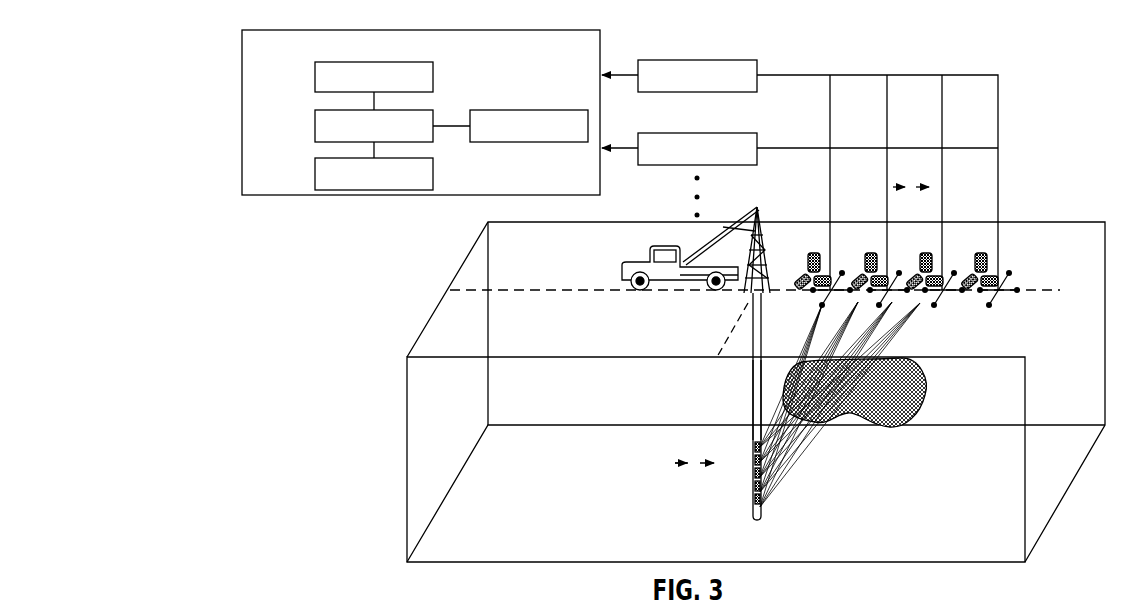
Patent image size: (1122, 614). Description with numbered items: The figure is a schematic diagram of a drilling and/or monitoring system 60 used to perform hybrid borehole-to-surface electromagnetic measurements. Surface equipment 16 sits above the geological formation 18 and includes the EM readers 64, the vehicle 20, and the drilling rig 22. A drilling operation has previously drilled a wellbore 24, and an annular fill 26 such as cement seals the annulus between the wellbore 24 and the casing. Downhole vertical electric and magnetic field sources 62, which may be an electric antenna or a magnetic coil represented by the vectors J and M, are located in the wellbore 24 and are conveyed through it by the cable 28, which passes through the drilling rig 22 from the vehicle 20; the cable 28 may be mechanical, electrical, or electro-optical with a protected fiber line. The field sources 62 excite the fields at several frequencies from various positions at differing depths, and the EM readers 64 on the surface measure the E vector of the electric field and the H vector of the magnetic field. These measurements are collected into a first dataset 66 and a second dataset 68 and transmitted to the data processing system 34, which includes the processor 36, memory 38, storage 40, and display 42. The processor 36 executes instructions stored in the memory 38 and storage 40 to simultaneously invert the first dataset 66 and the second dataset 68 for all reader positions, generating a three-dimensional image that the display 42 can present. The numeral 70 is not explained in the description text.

The surface equipment 16 is at (717, 218).
The geological formation 18 is at (941, 398).
The vehicle 20 is at (665, 246).
The drilling rig 22 is at (760, 213).
The wellbore 24 is at (751, 386).
The annular fill 26 is at (751, 400).
The cable 28 is at (753, 345).
The data processing system 34 is at (242, 112).
The processor 36 is at (315, 126).
The memory 38 is at (315, 78).
The storage 40 is at (315, 175).
The display 42 is at (520, 110).
The drilling and/or monitoring system 60 is at (1029, 62).
The electric and magnetic field sources 62 is at (747, 497).
The EM readers 64 is at (837, 262).
The dataset 1 66 is at (713, 60).
The dataset 2 68 is at (713, 133).
The legend 70 is at (236, 613).